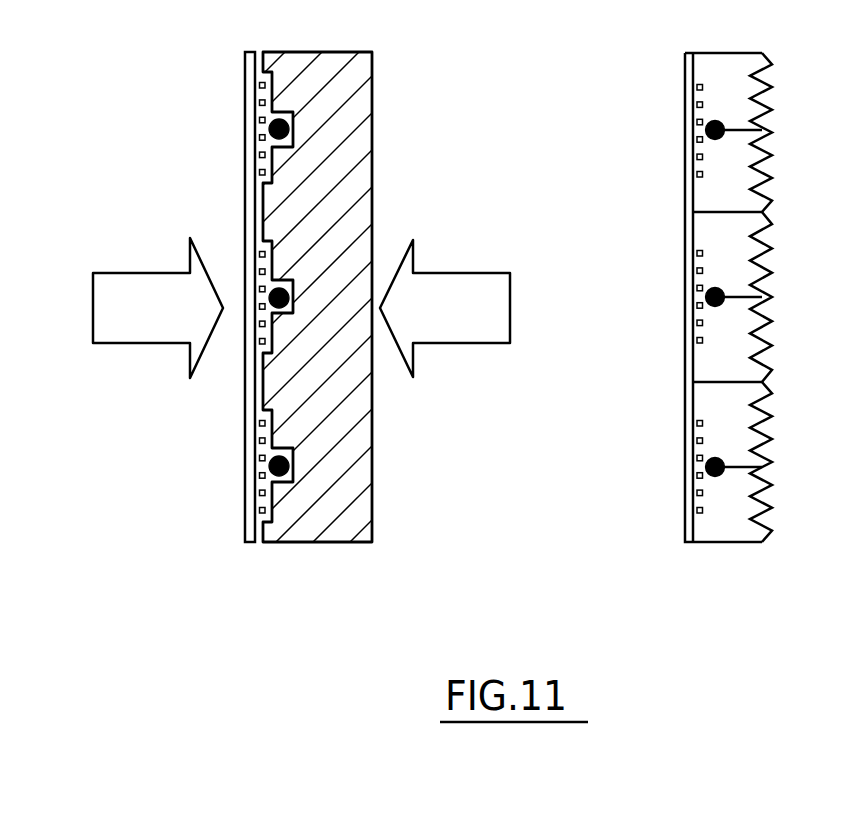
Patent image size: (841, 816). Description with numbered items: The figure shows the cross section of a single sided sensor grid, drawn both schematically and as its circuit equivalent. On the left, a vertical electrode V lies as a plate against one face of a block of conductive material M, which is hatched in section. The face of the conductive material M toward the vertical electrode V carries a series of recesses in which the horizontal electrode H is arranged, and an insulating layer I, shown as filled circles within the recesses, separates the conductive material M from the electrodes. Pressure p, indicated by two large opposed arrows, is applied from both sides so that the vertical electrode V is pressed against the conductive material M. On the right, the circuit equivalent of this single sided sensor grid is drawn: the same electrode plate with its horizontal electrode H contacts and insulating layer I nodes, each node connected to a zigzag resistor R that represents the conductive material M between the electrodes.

The conductive material M is at (420, 297).
The vertical electrode V is at (246, 83).
The horizontal electrode H is at (270, 147).
The insulating layer I is at (268, 127).
The pressure p is at (301, 308).
The resistor R is at (748, 297).